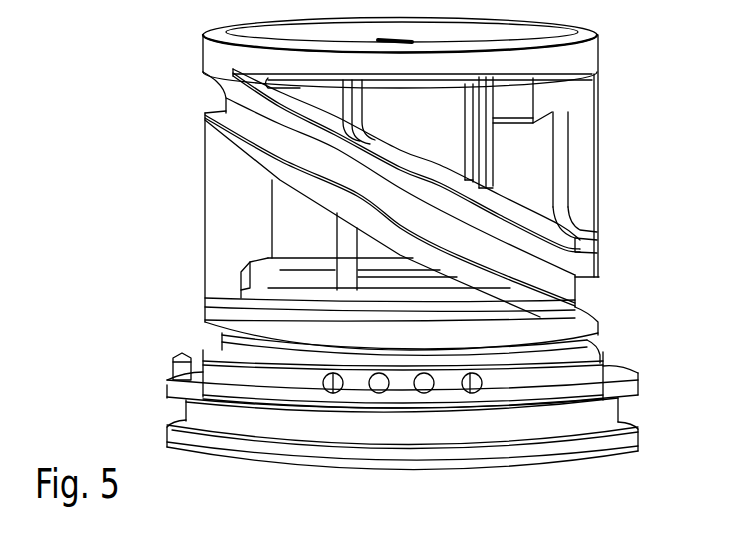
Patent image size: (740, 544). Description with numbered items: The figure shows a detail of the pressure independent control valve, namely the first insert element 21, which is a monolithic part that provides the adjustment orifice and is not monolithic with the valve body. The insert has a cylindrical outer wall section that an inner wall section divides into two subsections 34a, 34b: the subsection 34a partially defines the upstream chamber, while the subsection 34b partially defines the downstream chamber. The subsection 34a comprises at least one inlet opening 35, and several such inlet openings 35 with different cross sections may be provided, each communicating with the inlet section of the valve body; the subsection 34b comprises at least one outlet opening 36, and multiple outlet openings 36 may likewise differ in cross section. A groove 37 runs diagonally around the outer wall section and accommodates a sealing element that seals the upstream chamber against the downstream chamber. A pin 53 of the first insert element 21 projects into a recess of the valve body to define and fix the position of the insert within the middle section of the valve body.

The first insert element 21 is at (168, 103).
The subsection of the outer wall section 34a is at (218, 286).
The subsection of the outer wall section 34b is at (590, 75).
The inlet opening 35 is at (380, 243).
The outlet opening 36 is at (510, 92).
The groove 37 is at (550, 281).
The pin 53 is at (172, 370).